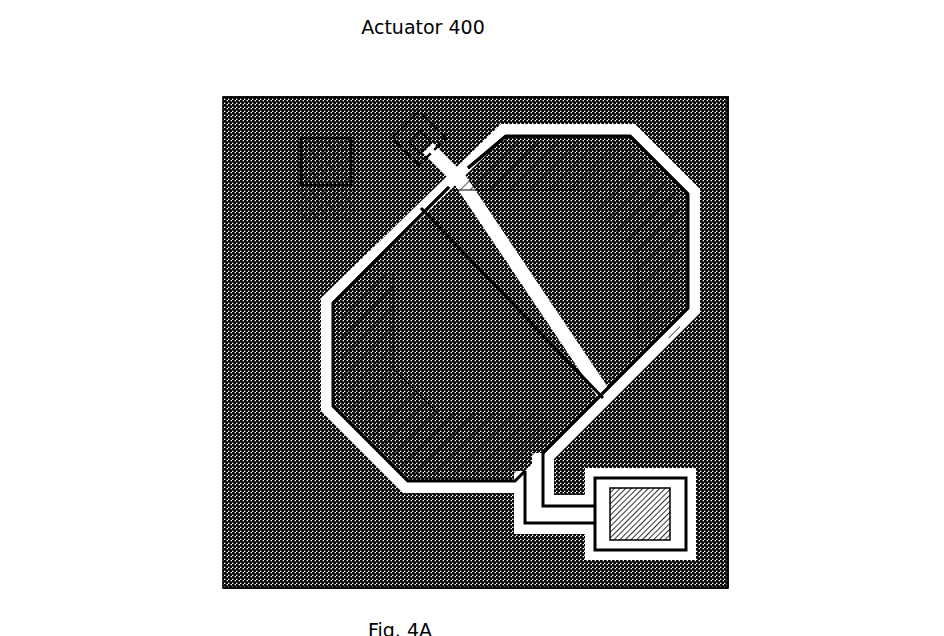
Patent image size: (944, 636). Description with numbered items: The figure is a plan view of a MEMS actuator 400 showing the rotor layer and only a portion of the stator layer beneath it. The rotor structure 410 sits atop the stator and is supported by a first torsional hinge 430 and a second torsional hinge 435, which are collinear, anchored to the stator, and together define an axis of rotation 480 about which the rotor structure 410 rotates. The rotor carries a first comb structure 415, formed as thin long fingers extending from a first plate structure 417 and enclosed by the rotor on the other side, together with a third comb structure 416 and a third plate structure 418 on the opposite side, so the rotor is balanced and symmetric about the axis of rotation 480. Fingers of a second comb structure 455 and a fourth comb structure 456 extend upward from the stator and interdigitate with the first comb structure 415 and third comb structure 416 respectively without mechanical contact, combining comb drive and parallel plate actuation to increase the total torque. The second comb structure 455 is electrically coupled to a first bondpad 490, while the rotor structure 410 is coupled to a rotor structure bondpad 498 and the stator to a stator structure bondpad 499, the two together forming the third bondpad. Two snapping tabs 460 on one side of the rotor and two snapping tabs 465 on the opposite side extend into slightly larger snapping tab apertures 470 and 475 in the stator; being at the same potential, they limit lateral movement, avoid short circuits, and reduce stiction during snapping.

The actuator 400 is at (475, 342).
The rotor structure 410 is at (447, 172).
The first comb structure 415 is at (366, 387).
The third comb structure 416 is at (661, 245).
The first plate structure 417 is at (431, 328).
The third plate structure 418 is at (575, 293).
The first torsional hinge 430 is at (379, 195).
The second torsional hinge 435 is at (632, 412).
The second comb structure 455 is at (341, 347).
The fourth comb structure 456 is at (641, 318).
The snapping tab 460 is at (339, 432).
The snapping tab 465 is at (629, 140).
The snapping tab aperture 470 is at (308, 422).
The snapping tab aperture 475 is at (634, 106).
The axis of rotation 480 is at (562, 430).
The first bondpad 490 is at (645, 513).
The rotor structure bondpad 498 is at (279, 170).
The stator structure bondpad 499 is at (284, 143).